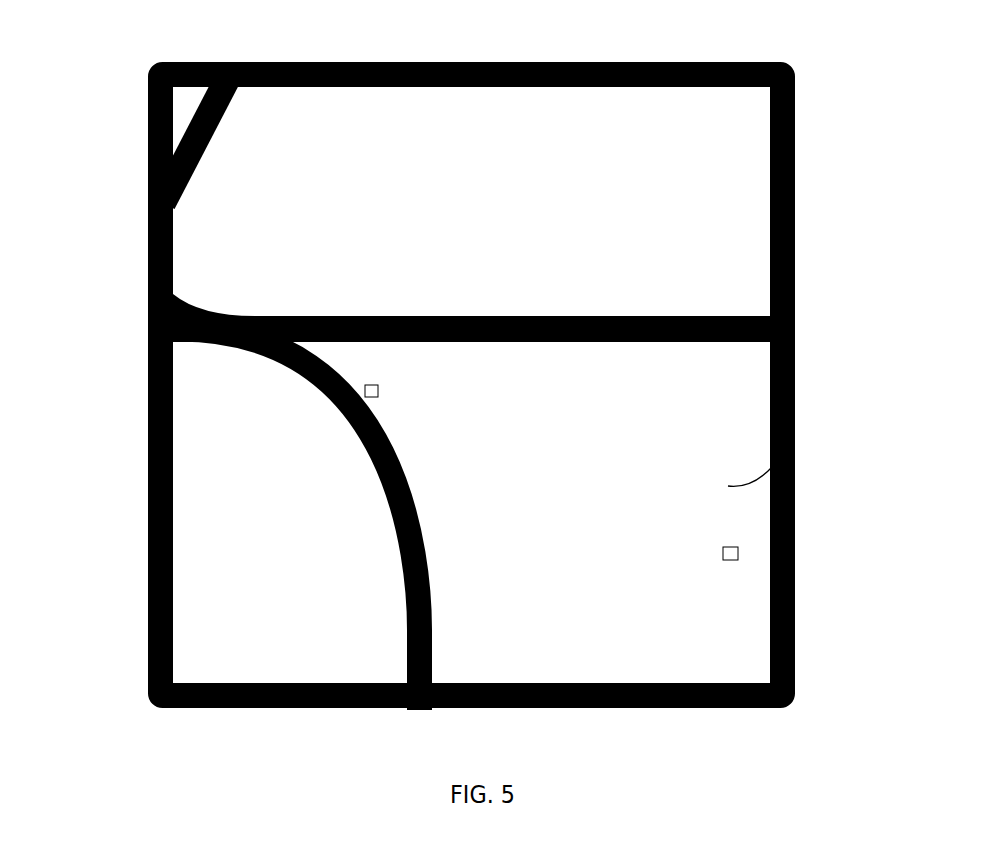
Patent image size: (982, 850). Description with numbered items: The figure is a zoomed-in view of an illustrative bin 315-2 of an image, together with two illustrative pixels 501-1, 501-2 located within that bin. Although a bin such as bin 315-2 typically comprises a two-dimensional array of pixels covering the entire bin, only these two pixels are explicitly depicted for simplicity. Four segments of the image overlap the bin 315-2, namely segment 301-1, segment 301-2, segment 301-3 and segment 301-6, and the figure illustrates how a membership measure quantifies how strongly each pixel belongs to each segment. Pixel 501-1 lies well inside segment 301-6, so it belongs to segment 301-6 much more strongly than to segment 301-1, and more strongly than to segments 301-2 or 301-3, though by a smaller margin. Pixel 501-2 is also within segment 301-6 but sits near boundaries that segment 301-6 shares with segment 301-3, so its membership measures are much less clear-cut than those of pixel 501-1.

The bin 315-2 is at (795, 122).
The segment 301-1 is at (187, 100).
The segment 301-2 is at (474, 135).
The segment 301-3 is at (210, 485).
The segment 301-6 is at (795, 452).
The pixel 501-2 is at (376, 387).
The pixel 501-1 is at (723, 555).